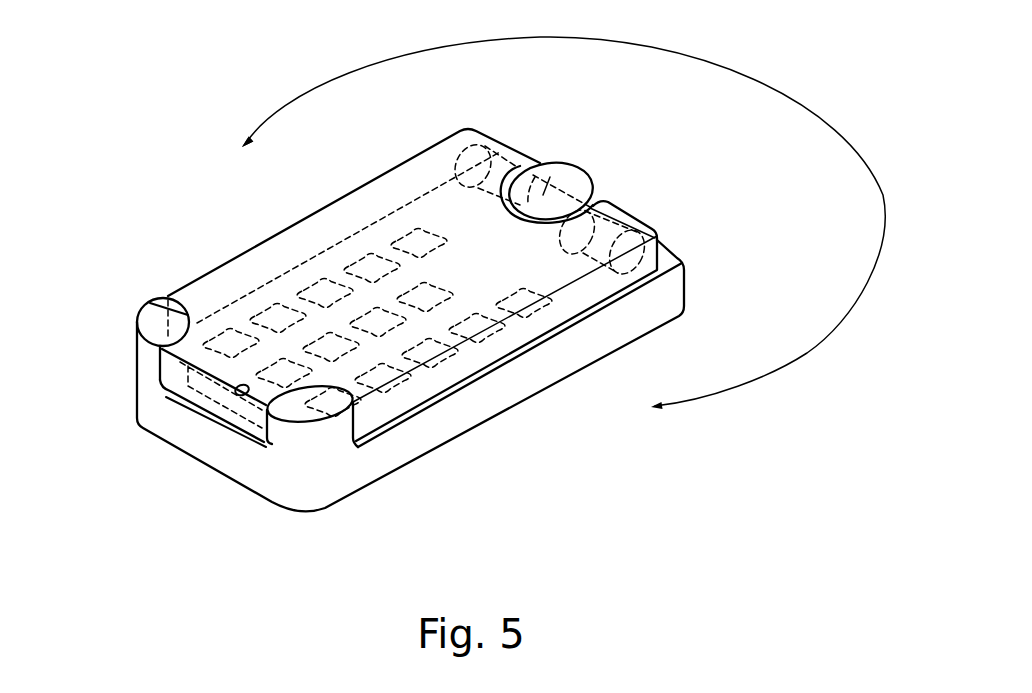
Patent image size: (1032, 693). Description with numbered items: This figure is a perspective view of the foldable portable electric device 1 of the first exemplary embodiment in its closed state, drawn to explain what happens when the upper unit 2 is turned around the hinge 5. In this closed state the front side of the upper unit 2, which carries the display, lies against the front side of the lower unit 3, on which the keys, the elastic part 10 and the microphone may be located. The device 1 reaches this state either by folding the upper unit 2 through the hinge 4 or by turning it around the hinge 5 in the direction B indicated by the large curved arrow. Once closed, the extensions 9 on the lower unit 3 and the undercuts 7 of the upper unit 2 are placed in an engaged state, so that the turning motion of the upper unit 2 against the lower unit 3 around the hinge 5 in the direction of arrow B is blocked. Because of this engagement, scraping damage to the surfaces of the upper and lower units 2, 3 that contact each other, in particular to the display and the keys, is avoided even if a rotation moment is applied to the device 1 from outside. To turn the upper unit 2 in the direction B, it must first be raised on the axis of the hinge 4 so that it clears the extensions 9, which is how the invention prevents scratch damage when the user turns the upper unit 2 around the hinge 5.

The foldable portable electric device 1 is at (534, 416).
The upper unit 2 is at (284, 231).
The lower unit 3 is at (398, 452).
The hinge 4 is at (502, 168).
The hinge 5 is at (590, 178).
The undercut 7 is at (151, 302).
The extension 9 is at (150, 354).
The elastic part 10 is at (236, 392).
The direction B is at (792, 99).